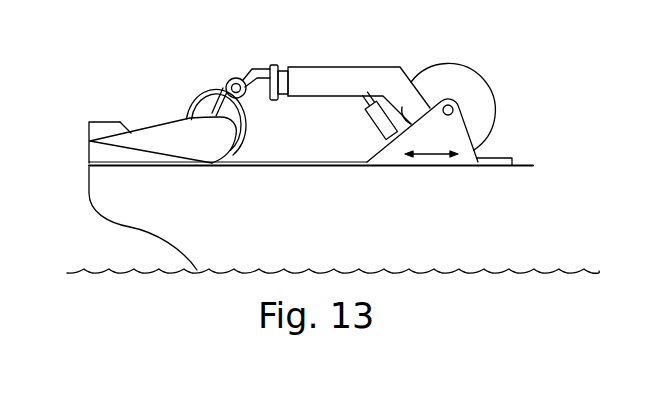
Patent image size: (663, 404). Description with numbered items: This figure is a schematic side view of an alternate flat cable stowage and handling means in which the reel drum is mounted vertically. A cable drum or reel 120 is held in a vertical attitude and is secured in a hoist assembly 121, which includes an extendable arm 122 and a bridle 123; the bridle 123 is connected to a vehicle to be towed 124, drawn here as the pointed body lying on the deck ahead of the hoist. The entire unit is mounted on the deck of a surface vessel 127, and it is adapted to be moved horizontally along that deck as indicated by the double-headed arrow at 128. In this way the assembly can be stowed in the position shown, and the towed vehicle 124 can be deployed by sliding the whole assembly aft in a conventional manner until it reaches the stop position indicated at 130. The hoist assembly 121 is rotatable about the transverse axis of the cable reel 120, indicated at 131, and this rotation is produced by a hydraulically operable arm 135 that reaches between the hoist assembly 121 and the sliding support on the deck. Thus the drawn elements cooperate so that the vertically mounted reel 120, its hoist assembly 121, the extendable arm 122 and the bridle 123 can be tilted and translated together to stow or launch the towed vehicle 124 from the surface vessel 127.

The cable drum or reel 120 is at (468, 76).
The hoist assembly 121 is at (368, 61).
The extendable arm 122 is at (283, 63).
The bridle 123 is at (205, 90).
The vehicle to be towed 124 is at (152, 135).
The surface vessel 127 is at (338, 218).
The horizontal movement 128 is at (431, 157).
The stop position 130 is at (258, 163).
The transverse axis of cable reel 131 is at (461, 106).
The hydraulically operable arm 135 is at (368, 103).